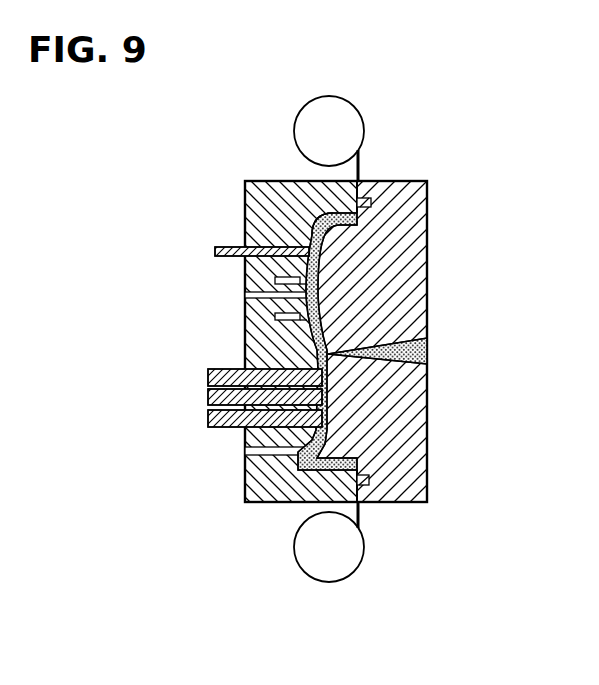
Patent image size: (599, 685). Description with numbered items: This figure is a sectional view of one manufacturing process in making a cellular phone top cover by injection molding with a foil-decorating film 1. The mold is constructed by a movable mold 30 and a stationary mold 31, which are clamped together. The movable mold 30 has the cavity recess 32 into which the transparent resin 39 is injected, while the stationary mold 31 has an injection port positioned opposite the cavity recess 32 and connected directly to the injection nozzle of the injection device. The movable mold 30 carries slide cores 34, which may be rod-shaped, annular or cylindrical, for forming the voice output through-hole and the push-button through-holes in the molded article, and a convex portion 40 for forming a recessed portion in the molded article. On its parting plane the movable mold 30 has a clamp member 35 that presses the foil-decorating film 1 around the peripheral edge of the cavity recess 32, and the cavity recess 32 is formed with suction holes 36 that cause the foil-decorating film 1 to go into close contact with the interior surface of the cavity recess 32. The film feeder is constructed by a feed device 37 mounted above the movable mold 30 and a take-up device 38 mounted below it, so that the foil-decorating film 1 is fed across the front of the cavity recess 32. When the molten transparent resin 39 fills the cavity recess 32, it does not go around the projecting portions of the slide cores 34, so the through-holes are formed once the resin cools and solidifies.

The foil-decorating film 1 is at (325, 272).
The movable mold 30 is at (268, 200).
The stationary mold 31 is at (425, 181).
The cavity recess 32 is at (312, 223).
The slide core 34 is at (215, 258).
The clamp member 35 is at (371, 198).
The suction holes 36 is at (245, 296).
The feed device 37 is at (327, 123).
The take-up device 38 is at (326, 570).
The transparent resin 39 is at (427, 350).
The convex portion 40 is at (245, 283).